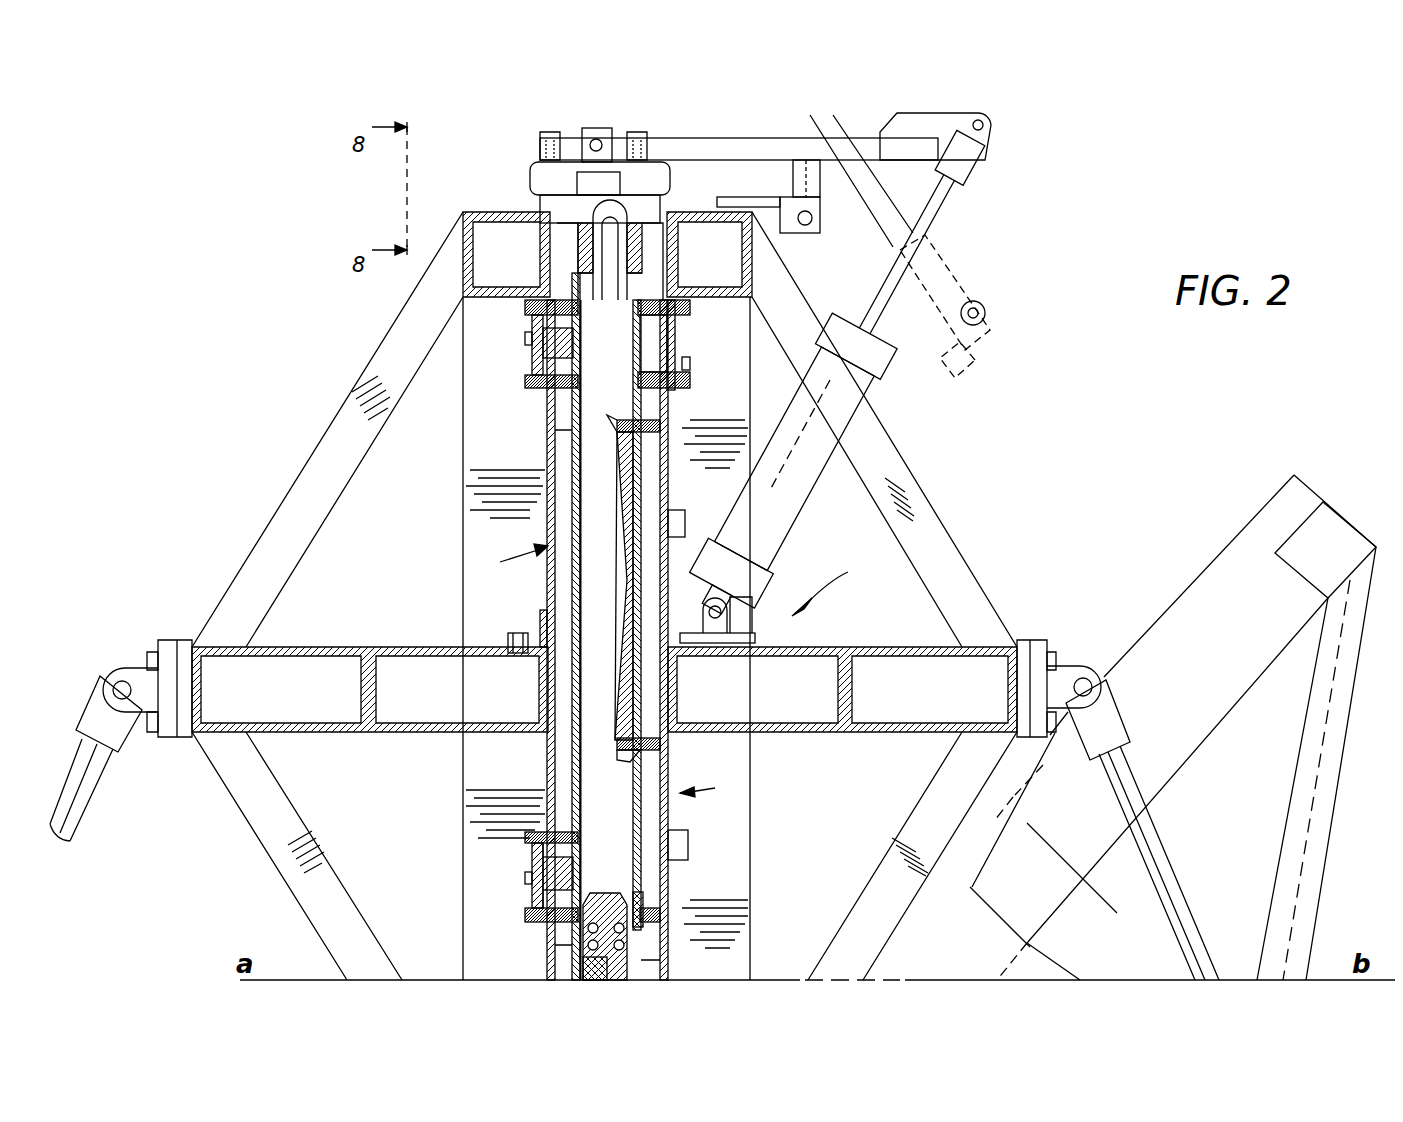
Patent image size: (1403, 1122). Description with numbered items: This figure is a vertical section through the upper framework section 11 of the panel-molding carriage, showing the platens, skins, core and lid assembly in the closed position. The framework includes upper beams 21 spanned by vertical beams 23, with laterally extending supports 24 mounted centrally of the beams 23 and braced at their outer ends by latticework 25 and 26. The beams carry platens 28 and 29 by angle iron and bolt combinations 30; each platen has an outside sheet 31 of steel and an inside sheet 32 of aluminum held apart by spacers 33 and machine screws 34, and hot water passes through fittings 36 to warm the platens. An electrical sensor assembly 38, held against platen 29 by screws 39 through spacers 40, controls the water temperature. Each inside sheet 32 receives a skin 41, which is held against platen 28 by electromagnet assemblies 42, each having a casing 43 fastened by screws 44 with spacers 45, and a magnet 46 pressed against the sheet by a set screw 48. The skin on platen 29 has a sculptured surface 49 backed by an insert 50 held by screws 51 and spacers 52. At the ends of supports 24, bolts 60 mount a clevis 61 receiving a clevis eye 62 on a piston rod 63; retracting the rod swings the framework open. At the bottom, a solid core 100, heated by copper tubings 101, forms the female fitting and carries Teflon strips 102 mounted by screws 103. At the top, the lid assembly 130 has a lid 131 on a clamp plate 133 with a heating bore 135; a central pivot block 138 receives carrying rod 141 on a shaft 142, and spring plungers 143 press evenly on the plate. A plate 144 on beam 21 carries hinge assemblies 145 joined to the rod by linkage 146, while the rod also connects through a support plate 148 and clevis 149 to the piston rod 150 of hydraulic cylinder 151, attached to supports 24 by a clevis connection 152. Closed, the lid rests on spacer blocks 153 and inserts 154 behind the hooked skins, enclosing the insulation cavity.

The upper framework section 11 is at (834, 586).
The upper beams 21 is at (466, 212).
The vertical beams 23 is at (463, 788).
The laterally extending supports 24 is at (306, 647).
The latticework 25 is at (322, 498).
The latticework 26 is at (250, 842).
The platen 28 is at (510, 558).
The platen 29 is at (711, 787).
The angle iron and bolt combination 30 is at (535, 630).
The outside sheet 31 is at (550, 515).
The inside sheet 32 is at (580, 478).
The spacers 33 is at (528, 925).
The machine screws 34 is at (552, 430).
The fittings 36 is at (690, 521).
The electrical sensor assembly 38 is at (686, 332).
The screws 39 is at (692, 307).
The spacers 40 is at (632, 297).
The skin 41 is at (627, 270).
The electromagnet assemblies 42 is at (530, 372).
The casing 43 is at (532, 860).
The screws 44 is at (525, 306).
The spacers 45 is at (548, 330).
The magnet 46 is at (545, 355).
The set screw 48 is at (525, 340).
The sculptured surface 49 is at (627, 520).
The backup insert 50 is at (626, 660).
The screws 51 is at (660, 426).
The spacers 52 is at (650, 758).
The bolts 60 is at (152, 650).
The clevis 61 is at (125, 668).
The clevis eye 62 is at (97, 702).
The piston rod 63 is at (84, 803).
The core 100 is at (605, 893).
The copper tubings 101 is at (588, 930).
The Teflon strip 102 is at (583, 965).
The screws 103 is at (641, 905).
The lid assembly 130 is at (960, 236).
The lid 131 is at (540, 205).
The clamp plate 133 is at (537, 178).
The bore 135 is at (607, 190).
The central pivot block 138 is at (610, 138).
The carrying rod 141 is at (690, 142).
The shaft 142 is at (590, 132).
The spring plungers 143 is at (540, 140).
The plate 144 is at (718, 200).
The hinge assemblies 145 is at (790, 233).
The linkage 146 is at (795, 180).
The support plate 148 is at (880, 136).
The clevis 149 is at (986, 150).
The piston rod 150 is at (950, 200).
The hydraulic cylinder 151 is at (806, 410).
The clevis connection 152 is at (703, 620).
The spacer blocks 153 is at (562, 240).
The inserts 154 is at (585, 255).